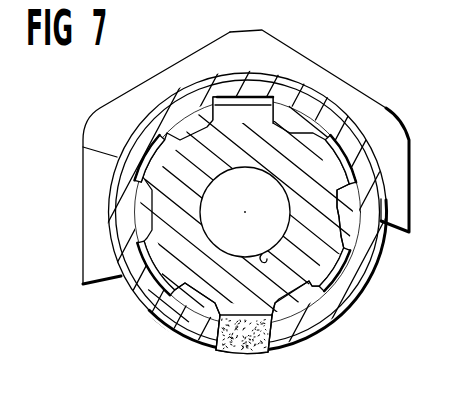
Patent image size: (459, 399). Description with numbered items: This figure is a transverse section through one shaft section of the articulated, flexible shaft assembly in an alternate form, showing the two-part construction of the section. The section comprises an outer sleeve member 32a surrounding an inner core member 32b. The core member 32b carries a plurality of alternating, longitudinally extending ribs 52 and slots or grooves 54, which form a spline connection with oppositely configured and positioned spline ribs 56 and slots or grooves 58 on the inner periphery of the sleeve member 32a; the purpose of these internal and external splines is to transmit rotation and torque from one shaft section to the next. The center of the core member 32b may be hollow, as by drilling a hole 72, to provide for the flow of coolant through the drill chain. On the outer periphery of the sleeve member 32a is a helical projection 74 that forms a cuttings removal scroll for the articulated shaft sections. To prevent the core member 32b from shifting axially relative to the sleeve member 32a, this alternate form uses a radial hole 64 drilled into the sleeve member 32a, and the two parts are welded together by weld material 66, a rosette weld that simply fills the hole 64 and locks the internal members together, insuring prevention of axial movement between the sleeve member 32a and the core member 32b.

The helical projection 74 is at (362, 107).
The outer sleeve member 32a is at (354, 153).
The inner core member 32b is at (259, 143).
The slots or grooves 54 is at (344, 215).
The ribs 52 is at (331, 256).
The slots or grooves 58 is at (336, 277).
The hole 72 is at (311, 282).
The spline ribs 56 is at (299, 299).
The radial hole 64 is at (259, 356).
The weld material 66 is at (230, 362).